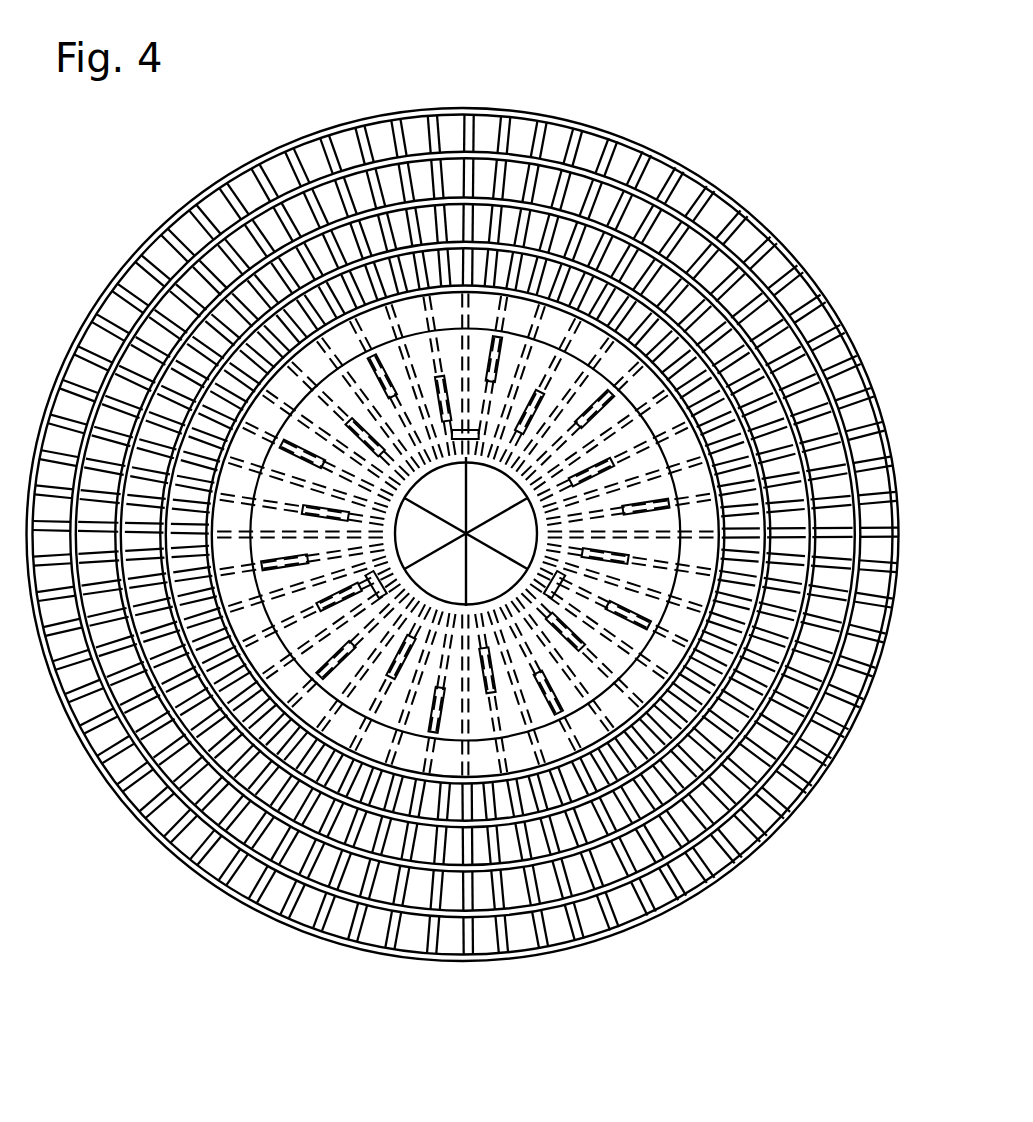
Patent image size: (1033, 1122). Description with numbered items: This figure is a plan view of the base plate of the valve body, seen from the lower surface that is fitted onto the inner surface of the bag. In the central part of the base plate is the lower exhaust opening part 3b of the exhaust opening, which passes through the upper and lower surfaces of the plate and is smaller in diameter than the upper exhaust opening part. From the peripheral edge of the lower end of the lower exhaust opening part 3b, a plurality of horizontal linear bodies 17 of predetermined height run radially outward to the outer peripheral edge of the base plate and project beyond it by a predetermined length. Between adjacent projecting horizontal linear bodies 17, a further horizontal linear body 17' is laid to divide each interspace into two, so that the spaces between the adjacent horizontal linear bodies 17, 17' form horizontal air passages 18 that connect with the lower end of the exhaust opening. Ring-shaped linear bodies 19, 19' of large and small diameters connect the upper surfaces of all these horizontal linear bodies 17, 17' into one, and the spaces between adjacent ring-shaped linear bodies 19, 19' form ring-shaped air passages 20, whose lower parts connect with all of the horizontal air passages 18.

The horizontal linear body 17 is at (465, 528).
The horizontal linear body 17' is at (465, 531).
The horizontal air passage 18 is at (595, 150).
The ring-shaped linear body 19 is at (465, 535).
The ring-shaped linear body 19' is at (484, 535).
The ring-shaped air passage 20 is at (790, 372).
The lower exhaust opening part 3b is at (492, 497).